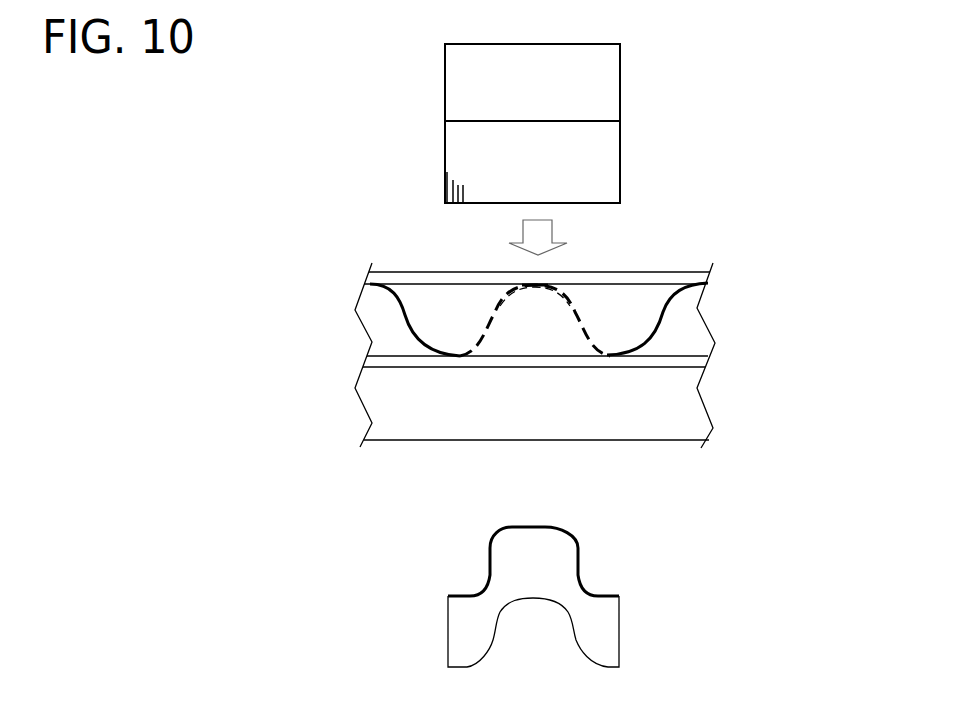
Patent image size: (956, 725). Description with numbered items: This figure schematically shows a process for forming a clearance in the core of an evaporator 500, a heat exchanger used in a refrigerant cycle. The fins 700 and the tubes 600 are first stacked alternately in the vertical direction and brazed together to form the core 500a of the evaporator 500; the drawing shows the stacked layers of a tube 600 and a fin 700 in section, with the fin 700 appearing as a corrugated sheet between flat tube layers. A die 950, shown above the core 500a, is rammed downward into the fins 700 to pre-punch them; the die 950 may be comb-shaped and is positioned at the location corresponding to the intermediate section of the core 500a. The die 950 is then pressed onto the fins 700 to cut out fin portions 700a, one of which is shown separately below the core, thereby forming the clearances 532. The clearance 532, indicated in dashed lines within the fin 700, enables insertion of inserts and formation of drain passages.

The die 950 is at (445, 63).
The evaporator 500 is at (697, 151).
The core 500a is at (653, 244).
The fin 700 is at (397, 302).
The tube 600 is at (370, 358).
The clearance 532 is at (520, 342).
The fin portion 700a is at (447, 619).